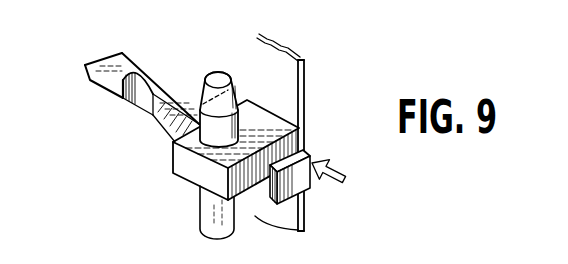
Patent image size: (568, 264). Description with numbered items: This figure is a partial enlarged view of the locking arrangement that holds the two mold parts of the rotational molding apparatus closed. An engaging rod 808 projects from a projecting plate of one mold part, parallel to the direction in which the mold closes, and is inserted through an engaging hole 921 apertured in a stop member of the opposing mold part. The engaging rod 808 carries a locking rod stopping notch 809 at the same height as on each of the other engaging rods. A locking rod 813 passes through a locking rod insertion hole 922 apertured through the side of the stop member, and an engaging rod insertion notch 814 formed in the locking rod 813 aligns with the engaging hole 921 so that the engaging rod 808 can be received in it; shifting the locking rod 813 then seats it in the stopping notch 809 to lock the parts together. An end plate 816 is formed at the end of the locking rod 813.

The locking rod 813 is at (93, 78).
The engaging rod insertion notch 814 is at (136, 100).
The locking rod stopping notch 809 is at (224, 167).
The engaging rod 808 is at (210, 223).
The engaging hole 921 is at (208, 140).
The locking rod insertion hole 922 is at (222, 162).
The end plate 816 is at (300, 180).